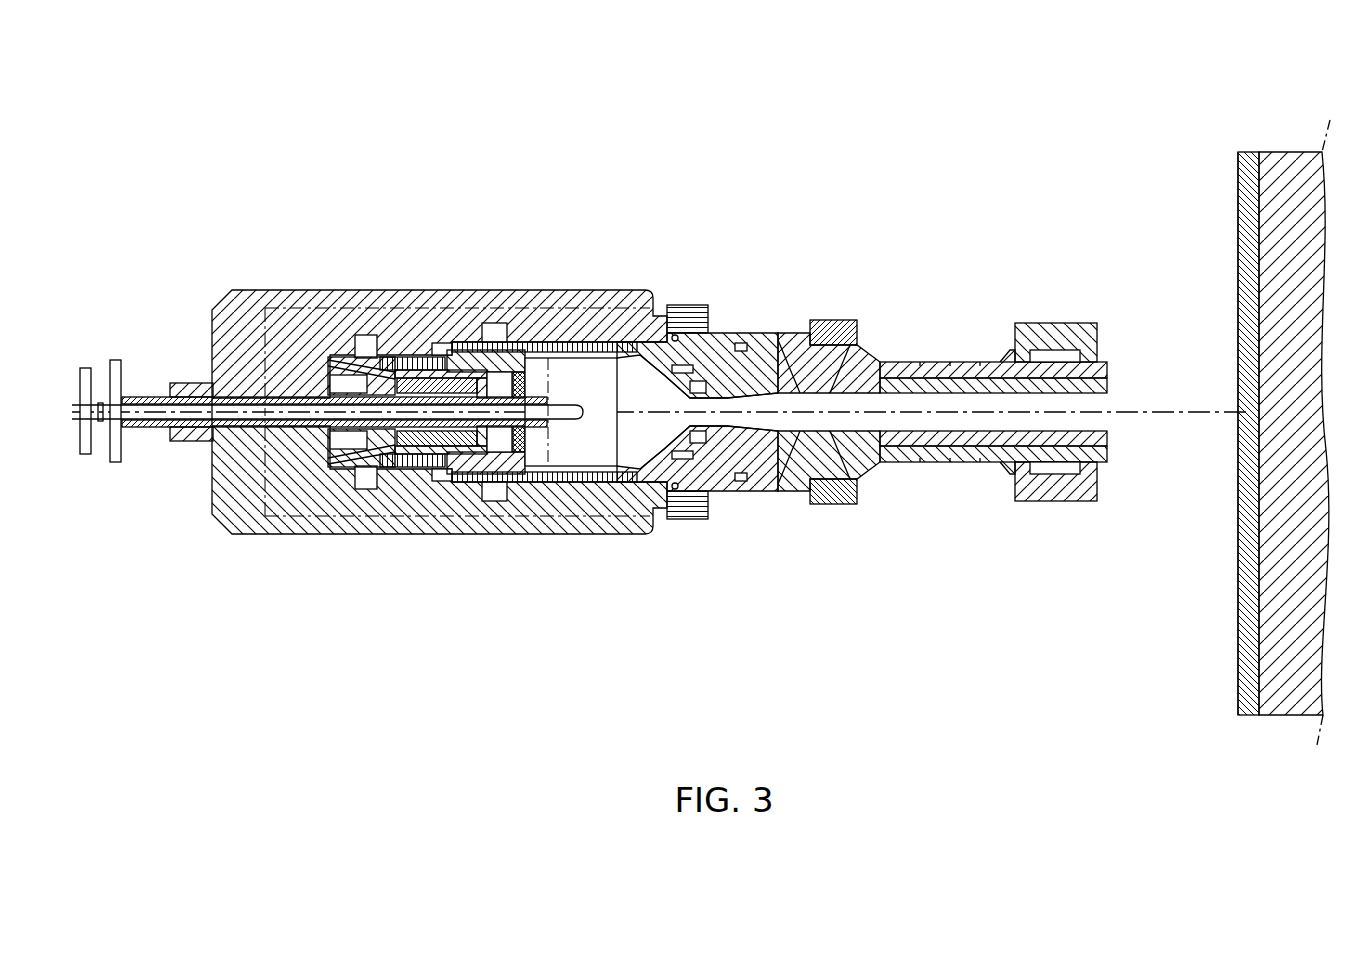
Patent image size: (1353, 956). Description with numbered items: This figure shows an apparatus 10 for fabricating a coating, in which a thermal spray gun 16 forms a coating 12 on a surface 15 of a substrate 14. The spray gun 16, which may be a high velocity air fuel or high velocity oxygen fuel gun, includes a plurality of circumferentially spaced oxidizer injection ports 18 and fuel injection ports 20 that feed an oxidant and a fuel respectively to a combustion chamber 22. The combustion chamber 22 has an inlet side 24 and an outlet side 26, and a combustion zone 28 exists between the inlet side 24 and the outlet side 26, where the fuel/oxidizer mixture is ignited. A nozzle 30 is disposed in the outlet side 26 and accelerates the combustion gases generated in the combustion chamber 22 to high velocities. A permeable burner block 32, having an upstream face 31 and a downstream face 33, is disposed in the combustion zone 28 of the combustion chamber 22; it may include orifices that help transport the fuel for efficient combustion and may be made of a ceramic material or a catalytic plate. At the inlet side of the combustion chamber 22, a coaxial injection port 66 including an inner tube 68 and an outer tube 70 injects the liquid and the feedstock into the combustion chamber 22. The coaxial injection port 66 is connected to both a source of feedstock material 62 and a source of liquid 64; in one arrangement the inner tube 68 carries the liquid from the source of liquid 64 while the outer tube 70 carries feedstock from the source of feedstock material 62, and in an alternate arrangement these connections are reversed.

The apparatus 10 is at (1026, 105).
The coating 12 is at (1238, 217).
The substrate 14 is at (1290, 150).
The surface 15 is at (1252, 178).
The thermal spray gun 16 is at (922, 298).
The oxidizer injection ports 18 is at (405, 500).
The fuel injection ports 20 is at (418, 486).
The combustion chamber 22 is at (575, 470).
The inlet side 24 is at (501, 452).
The outlet side 26 is at (660, 490).
The combustion zone 28 is at (620, 462).
The nozzle 30 is at (692, 394).
The upstream face 31 is at (470, 347).
The permeable burner block 32 is at (526, 376).
The downstream face 33 is at (526, 446).
The source of feedstock material 62 is at (82, 455).
The source of liquid 64 is at (114, 360).
The coaxial injection port 66 is at (140, 422).
The inner tube 68 is at (100, 424).
The outer tube 70 is at (150, 396).